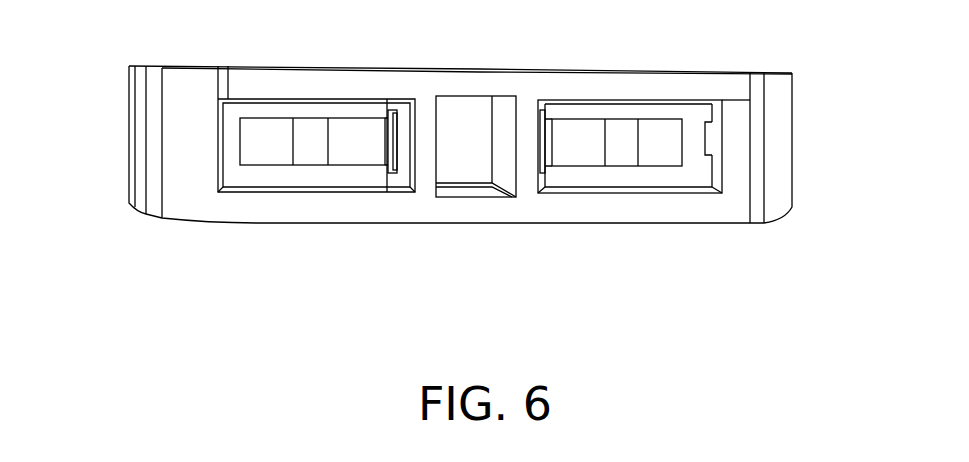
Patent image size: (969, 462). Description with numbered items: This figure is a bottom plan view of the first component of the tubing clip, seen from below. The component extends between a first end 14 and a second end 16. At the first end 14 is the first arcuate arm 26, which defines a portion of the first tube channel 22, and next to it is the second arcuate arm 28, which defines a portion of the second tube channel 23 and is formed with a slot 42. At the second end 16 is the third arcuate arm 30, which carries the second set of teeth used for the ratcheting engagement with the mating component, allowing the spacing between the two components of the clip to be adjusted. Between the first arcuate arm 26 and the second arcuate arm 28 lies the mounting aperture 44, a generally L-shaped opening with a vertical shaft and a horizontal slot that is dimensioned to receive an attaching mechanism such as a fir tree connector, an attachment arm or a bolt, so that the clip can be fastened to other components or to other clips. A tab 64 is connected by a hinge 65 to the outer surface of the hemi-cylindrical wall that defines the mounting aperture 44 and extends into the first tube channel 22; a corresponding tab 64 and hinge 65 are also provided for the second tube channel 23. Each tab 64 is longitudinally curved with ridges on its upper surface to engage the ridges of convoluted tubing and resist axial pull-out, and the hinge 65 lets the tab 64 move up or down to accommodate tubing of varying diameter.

The first end 14 is at (96, 142).
The second end 16 is at (839, 173).
The first tube channel 22 is at (242, 172).
The second tube channel 23 is at (695, 169).
The first arcuate arm 26 is at (135, 87).
The second arcuate arm 28 is at (721, 117).
The third arcuate arm 30 is at (777, 137).
The slot 42 is at (709, 139).
The mounting aperture 44 is at (473, 146).
The tab 64 is at (317, 151).
The hinge 65 is at (393, 143).